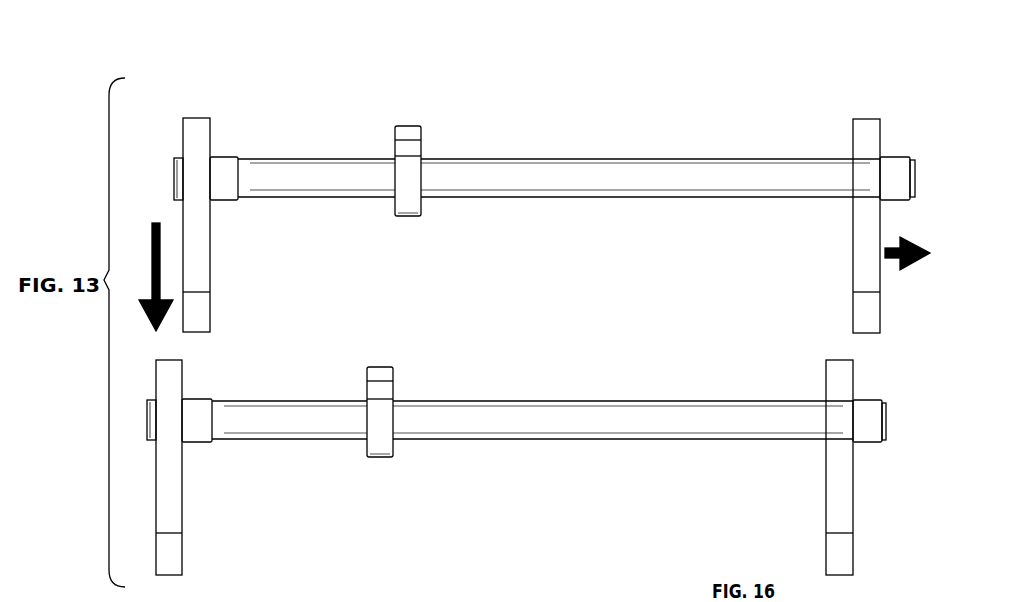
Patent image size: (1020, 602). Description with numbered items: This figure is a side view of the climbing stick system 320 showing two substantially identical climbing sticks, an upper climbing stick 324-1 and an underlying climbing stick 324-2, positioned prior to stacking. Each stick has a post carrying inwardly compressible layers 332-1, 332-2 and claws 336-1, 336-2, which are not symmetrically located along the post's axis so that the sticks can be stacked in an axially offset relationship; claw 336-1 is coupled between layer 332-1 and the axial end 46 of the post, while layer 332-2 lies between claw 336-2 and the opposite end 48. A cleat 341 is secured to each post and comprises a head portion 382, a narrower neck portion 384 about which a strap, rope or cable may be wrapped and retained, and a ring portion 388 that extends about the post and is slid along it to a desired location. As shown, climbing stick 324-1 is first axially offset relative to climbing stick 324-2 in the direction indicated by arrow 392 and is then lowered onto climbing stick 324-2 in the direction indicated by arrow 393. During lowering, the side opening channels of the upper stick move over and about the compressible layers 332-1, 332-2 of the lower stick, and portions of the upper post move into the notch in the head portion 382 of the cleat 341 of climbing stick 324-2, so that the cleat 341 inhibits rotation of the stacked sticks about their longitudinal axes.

The climbing stick system 320 is at (141, 171).
The climbing stick 324-1 is at (197, 116).
The climbing stick 324-2 is at (153, 500).
The axial end 46 is at (161, 171).
The end 48 is at (917, 166).
The inwardly compressible layer 332-1 is at (222, 172).
The inwardly compressible layer 332-2 is at (892, 163).
The claw 336-1 is at (177, 523).
The claw 336-2 is at (853, 513).
The cleat 341 is at (424, 116).
The head portion 382 is at (404, 126).
The neck portion 384 is at (422, 148).
The ring portion 388 is at (413, 216).
The arrow 392 is at (886, 250).
The arrow 393 is at (151, 260).